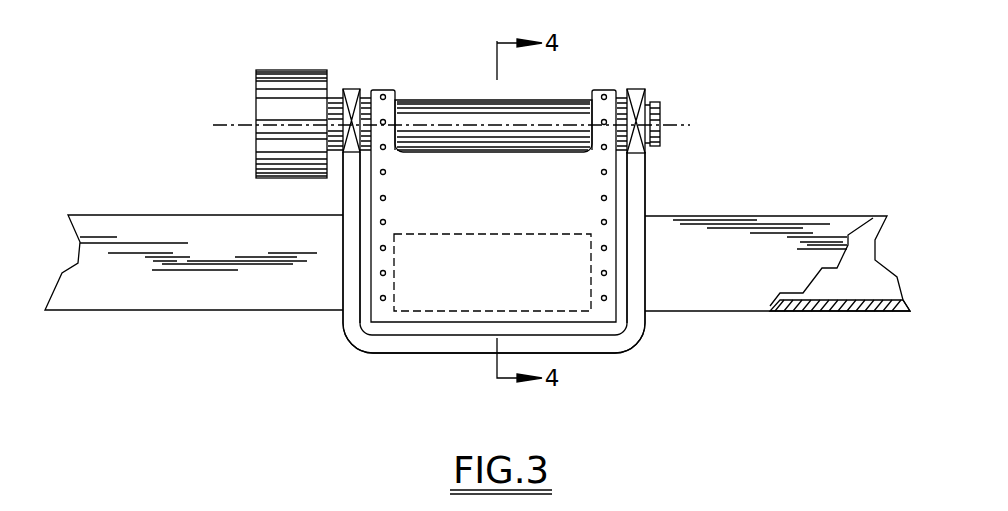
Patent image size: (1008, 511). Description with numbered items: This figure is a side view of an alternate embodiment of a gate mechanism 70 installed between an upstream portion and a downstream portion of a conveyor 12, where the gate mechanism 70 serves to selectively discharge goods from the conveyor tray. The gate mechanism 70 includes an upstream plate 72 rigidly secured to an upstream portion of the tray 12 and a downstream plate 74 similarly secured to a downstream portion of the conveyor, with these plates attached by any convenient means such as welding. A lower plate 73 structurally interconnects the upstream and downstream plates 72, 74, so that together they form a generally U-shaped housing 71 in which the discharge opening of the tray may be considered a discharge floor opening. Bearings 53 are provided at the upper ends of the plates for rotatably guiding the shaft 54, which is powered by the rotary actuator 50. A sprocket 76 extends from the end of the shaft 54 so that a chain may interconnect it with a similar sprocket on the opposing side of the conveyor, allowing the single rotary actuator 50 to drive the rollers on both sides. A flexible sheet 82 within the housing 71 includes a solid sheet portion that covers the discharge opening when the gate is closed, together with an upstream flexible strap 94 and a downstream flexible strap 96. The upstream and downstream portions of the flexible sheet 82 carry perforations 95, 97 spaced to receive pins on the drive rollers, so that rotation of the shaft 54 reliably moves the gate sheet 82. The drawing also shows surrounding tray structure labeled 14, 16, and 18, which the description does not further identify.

The conveyor 12 is at (131, 181).
The base plate 14 is at (835, 312).
The web 16 is at (236, 245).
The flange 18 is at (860, 258).
The rotary actuator 50 is at (310, 70).
The bearings 53 is at (349, 89).
The shaft 54 is at (470, 100).
The gate mechanism 70 is at (681, 71).
The U-shaped housing 71 is at (402, 379).
The upstream plate 72 is at (345, 195).
The lower plate 73 is at (602, 353).
The downstream plate 74 is at (635, 195).
The sprocket 76 is at (660, 108).
The flexible sheet 82 is at (508, 220).
The upstream flexible strap 94 is at (388, 172).
The perforations 95 is at (388, 222).
The downstream flexible strap 96 is at (600, 172).
The perforations 97 is at (600, 222).